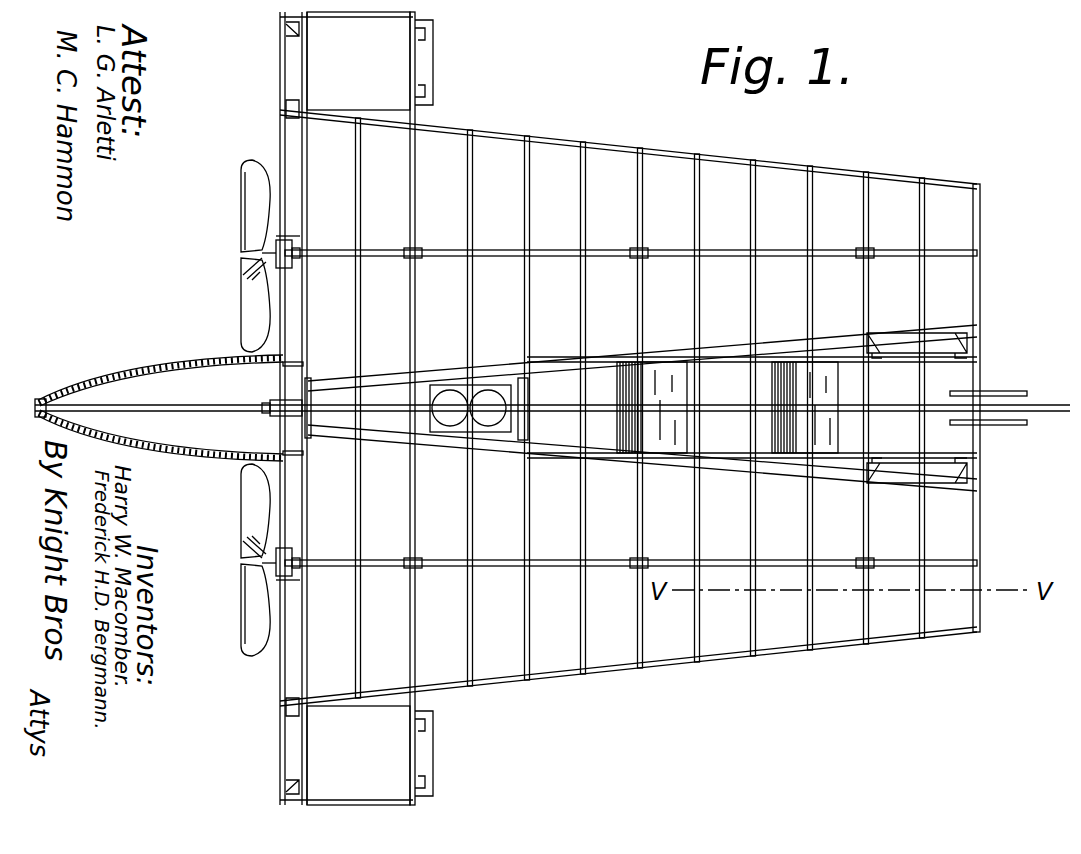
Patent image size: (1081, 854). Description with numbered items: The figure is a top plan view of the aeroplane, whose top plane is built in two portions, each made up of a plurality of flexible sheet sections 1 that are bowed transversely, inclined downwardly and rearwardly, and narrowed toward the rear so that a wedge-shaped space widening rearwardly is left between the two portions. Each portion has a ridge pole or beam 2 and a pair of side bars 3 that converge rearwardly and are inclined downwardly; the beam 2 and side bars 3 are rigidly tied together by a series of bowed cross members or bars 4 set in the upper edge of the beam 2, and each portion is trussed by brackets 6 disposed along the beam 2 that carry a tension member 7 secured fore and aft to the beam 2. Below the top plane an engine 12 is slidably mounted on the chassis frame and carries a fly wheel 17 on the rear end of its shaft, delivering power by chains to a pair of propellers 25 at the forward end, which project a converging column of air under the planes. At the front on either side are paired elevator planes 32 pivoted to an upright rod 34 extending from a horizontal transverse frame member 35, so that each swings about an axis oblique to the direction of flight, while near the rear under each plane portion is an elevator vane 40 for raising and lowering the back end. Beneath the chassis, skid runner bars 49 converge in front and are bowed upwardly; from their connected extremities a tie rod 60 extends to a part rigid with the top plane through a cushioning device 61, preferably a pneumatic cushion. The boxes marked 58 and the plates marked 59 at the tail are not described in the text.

The sections 1 is at (672, 185).
The ridge pole or beam 2 is at (500, 262).
The side bars 3 is at (559, 143).
The bowed cross members or bars 4 is at (522, 186).
The brackets 6 is at (420, 257).
The tension member 7 is at (548, 256).
The engine 12 is at (488, 390).
The fly wheel 17 is at (530, 399).
The propellers 25 is at (250, 203).
The elevator planes 32 is at (430, 56).
The upright rod 34 is at (285, 113).
The horizontal transverse frame member 35 is at (283, 384).
The elevator vane 40 is at (918, 340).
The runner bars 49 is at (155, 372).
The end box 58 is at (346, 408).
The tail plates 59 is at (1000, 394).
The tie rod 60 is at (210, 412).
The cushioning device 61 is at (280, 416).